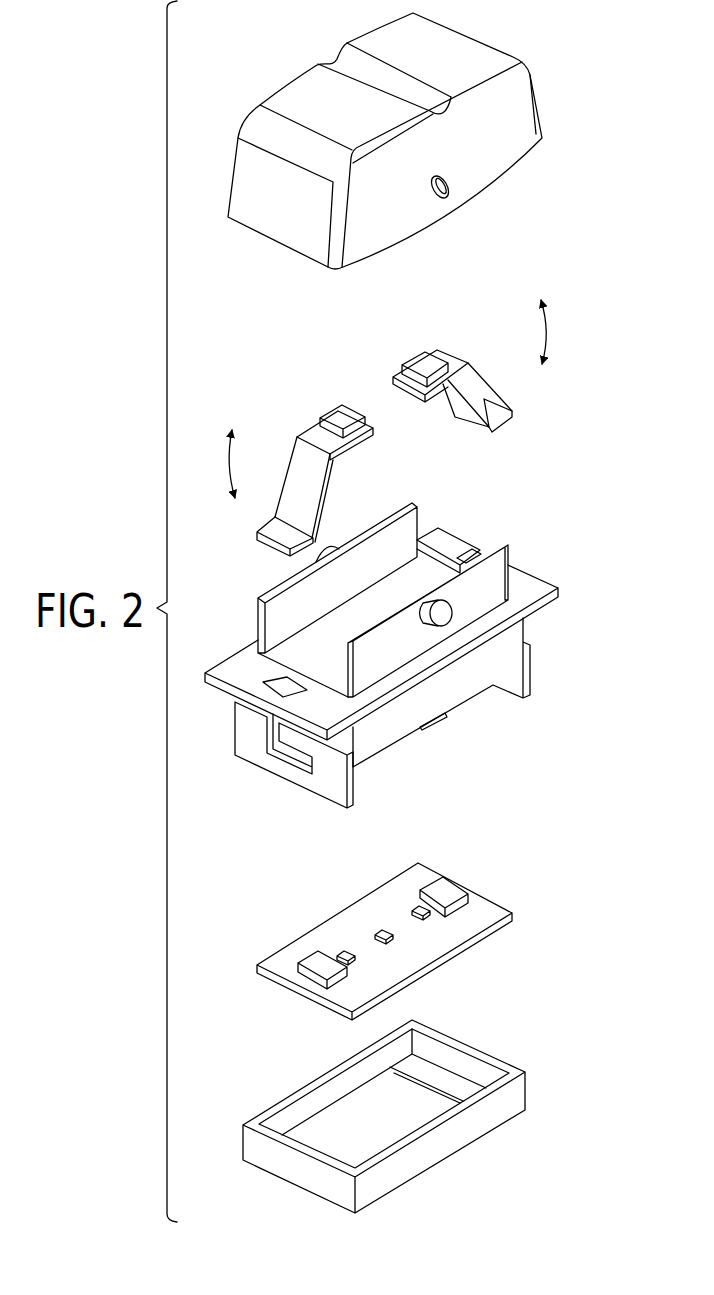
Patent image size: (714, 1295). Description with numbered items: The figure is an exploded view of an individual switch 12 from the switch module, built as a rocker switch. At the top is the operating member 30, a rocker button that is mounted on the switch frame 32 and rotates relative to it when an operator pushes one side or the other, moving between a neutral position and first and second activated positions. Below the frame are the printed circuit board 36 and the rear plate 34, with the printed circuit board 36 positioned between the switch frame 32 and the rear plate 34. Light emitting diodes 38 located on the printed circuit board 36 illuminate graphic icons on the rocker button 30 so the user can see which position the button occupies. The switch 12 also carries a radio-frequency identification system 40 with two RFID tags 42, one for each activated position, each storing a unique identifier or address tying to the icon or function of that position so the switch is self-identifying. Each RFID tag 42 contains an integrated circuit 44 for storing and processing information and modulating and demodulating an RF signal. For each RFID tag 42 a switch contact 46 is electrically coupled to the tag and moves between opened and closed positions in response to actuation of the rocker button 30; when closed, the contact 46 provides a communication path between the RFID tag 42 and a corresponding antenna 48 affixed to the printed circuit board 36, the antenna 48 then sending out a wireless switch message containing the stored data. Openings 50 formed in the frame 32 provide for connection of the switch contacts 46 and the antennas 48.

The switch 12 is at (576, 285).
The operating member 30 is at (553, 37).
The switch frame 32 is at (532, 568).
The rear plate 34 is at (456, 1138).
The printed circuit board 36 is at (279, 956).
The light emitting diodes 38 is at (346, 951).
The radio-frequency identification system 40 is at (316, 320).
The RFID tag 42 is at (356, 406).
The integrated circuit 44 is at (418, 352).
The switch contact 46 is at (468, 403).
The antenna 48 is at (461, 891).
The opening 50 is at (472, 554).